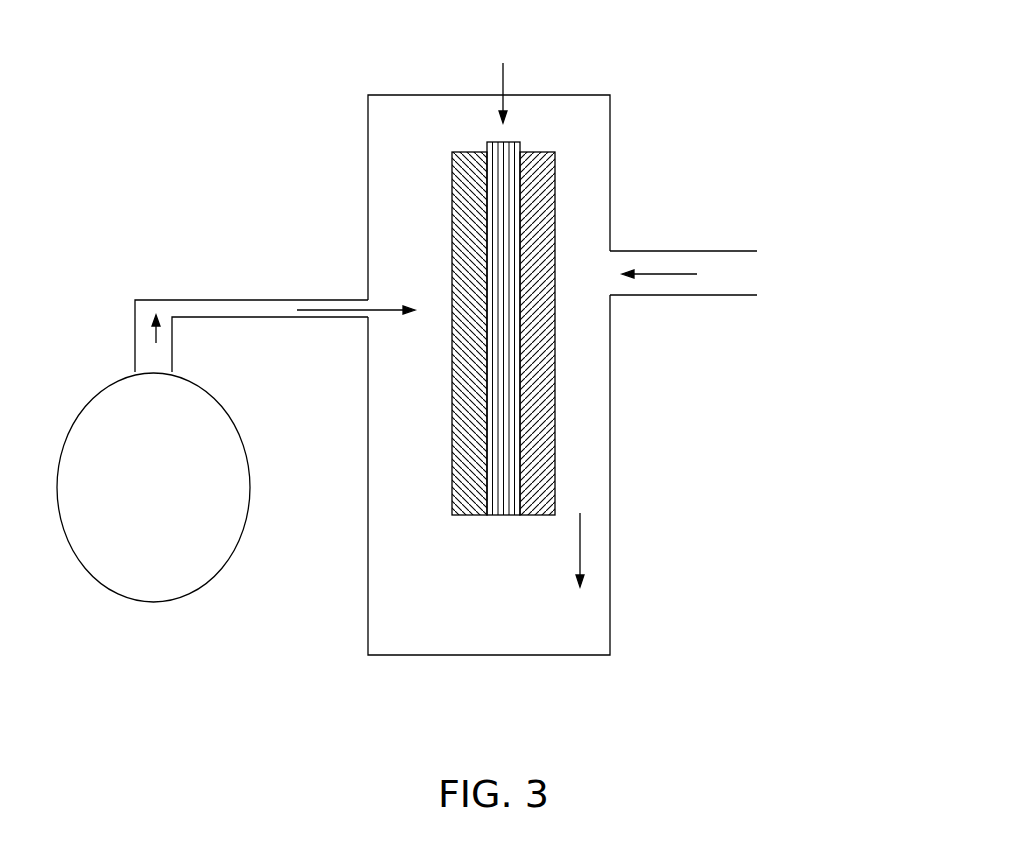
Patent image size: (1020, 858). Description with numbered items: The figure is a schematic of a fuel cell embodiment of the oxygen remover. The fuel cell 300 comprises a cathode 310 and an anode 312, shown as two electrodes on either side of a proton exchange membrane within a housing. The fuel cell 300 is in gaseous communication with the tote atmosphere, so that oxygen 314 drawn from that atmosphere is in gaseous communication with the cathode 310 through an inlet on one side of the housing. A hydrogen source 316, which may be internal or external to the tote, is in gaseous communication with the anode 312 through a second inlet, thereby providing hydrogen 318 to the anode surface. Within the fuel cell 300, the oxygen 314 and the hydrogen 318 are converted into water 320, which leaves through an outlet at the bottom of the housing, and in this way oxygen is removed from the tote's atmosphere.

The fuel cell 300 is at (536, 52).
The cathode 310 is at (555, 478).
The anode 312 is at (435, 487).
The oxygen 314 is at (812, 308).
The hydrogen source 316 is at (122, 597).
The hydrogen 318 is at (407, 255).
The water 320 is at (575, 645).